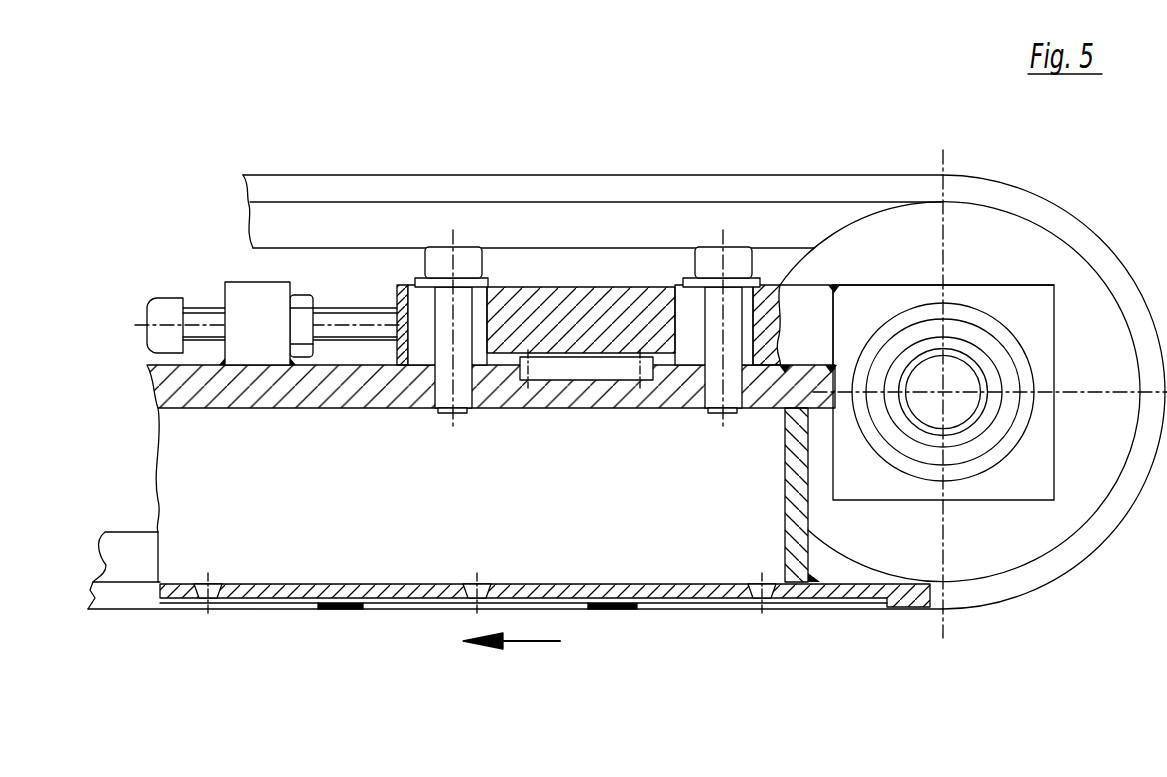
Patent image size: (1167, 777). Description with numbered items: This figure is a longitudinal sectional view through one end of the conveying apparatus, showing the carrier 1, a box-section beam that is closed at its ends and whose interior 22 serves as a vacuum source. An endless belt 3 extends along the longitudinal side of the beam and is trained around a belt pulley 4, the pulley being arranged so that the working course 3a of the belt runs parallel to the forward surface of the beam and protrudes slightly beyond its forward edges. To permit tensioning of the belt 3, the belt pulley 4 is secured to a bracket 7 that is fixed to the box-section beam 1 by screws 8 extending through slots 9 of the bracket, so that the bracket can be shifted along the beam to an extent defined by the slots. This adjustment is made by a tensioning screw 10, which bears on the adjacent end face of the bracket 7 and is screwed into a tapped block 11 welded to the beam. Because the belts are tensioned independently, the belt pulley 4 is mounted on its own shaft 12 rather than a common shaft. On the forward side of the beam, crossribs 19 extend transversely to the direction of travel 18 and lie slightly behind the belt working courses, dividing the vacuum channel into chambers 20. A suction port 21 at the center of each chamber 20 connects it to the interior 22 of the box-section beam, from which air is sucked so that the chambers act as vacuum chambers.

The carrier 1 is at (173, 383).
The endless belt 3 is at (768, 183).
The working course 3a is at (790, 612).
The belt pulley 4 is at (843, 243).
The bracket 7 is at (580, 307).
The screws 8 is at (442, 257).
The slots 9 is at (417, 313).
The tensioning screw 10 is at (197, 313).
The tapped block 11 is at (238, 297).
The shaft 12 is at (930, 370).
The direction of travel 18 is at (530, 643).
The crossrib 19 is at (343, 598).
The chamber 20 is at (280, 602).
The suction port 21 is at (200, 595).
The interior 22 is at (454, 508).